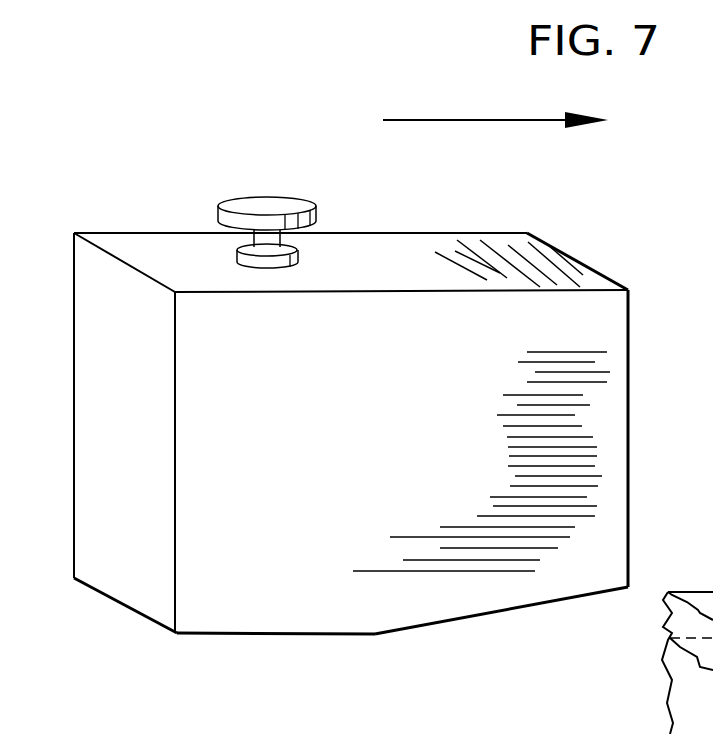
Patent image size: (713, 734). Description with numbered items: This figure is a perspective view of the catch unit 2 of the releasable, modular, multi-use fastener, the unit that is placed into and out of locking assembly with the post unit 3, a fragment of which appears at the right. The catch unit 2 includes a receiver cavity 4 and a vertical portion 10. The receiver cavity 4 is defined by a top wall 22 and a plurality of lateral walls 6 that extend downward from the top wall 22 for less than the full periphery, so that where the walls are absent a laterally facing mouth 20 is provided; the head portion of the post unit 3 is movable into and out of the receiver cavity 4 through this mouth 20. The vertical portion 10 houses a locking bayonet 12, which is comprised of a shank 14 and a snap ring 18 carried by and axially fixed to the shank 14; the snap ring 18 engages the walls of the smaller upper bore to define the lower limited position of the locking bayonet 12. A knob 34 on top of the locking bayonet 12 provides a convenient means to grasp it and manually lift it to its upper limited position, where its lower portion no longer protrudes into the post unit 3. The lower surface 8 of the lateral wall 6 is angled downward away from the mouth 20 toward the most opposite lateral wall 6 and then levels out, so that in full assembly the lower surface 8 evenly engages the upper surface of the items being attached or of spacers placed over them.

The catch unit 2 is at (248, 397).
The post unit 3 is at (687, 627).
The receiver cavity 4 is at (473, 456).
The lateral walls 6 is at (203, 537).
The lower surface 8 is at (275, 634).
The vertical portion 10 is at (168, 233).
The locking bayonet 12 is at (218, 213).
The shank 14 is at (270, 240).
The snap ring 18 is at (237, 255).
The laterally facing mouth 20 is at (628, 510).
The top wall 22 is at (403, 262).
The knob 34 is at (272, 210).